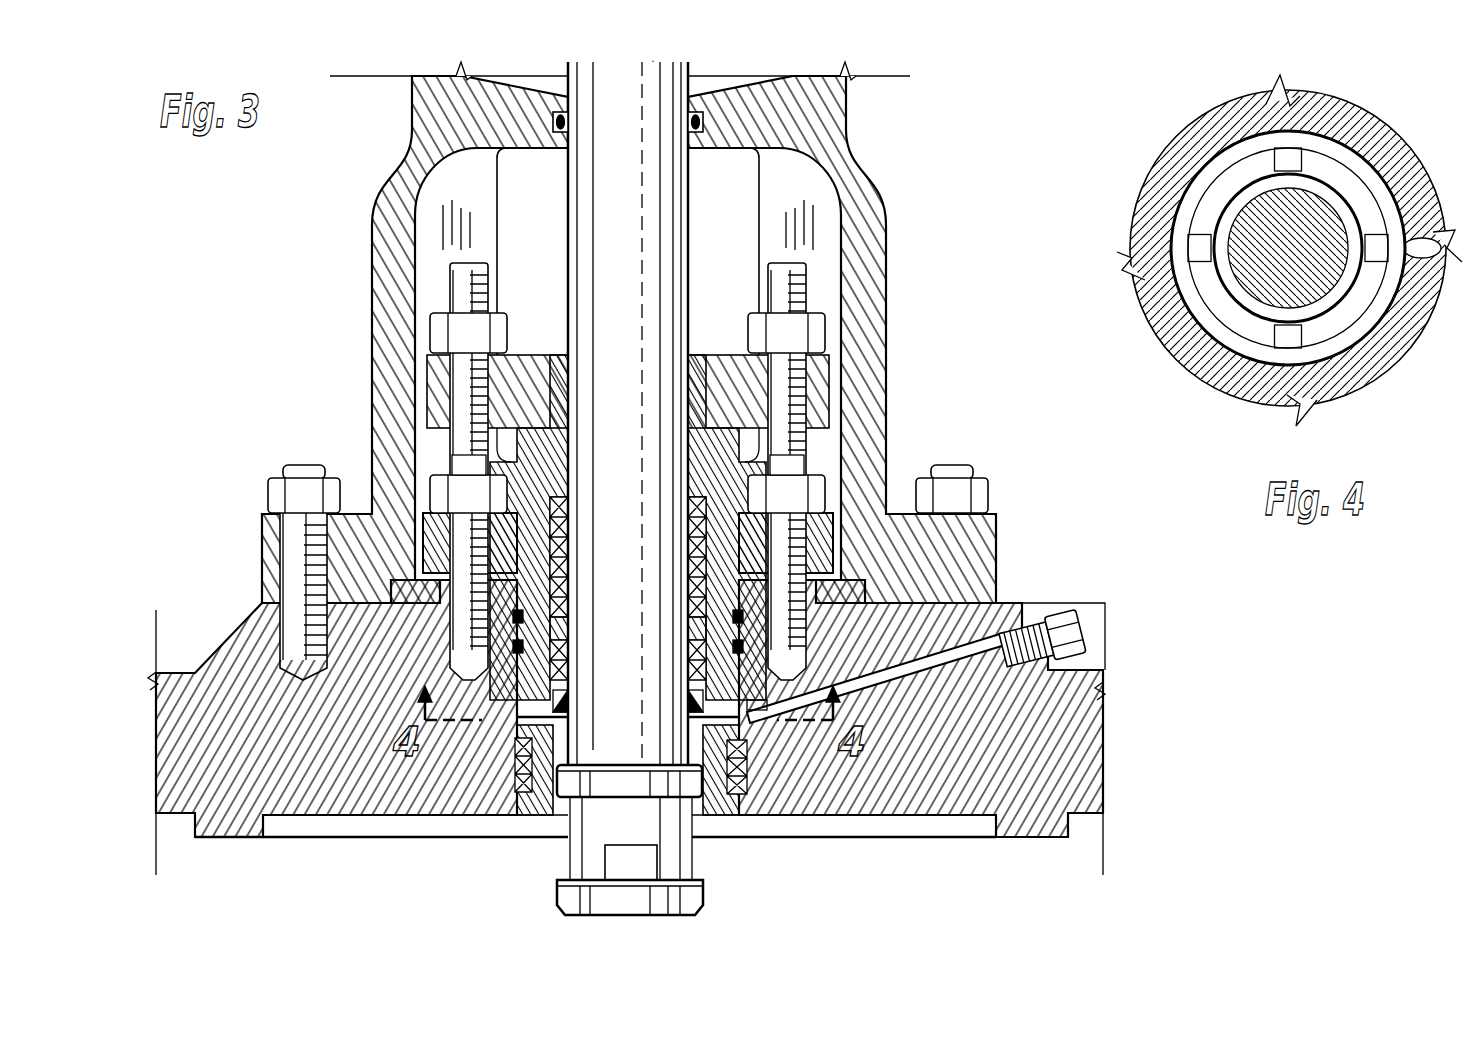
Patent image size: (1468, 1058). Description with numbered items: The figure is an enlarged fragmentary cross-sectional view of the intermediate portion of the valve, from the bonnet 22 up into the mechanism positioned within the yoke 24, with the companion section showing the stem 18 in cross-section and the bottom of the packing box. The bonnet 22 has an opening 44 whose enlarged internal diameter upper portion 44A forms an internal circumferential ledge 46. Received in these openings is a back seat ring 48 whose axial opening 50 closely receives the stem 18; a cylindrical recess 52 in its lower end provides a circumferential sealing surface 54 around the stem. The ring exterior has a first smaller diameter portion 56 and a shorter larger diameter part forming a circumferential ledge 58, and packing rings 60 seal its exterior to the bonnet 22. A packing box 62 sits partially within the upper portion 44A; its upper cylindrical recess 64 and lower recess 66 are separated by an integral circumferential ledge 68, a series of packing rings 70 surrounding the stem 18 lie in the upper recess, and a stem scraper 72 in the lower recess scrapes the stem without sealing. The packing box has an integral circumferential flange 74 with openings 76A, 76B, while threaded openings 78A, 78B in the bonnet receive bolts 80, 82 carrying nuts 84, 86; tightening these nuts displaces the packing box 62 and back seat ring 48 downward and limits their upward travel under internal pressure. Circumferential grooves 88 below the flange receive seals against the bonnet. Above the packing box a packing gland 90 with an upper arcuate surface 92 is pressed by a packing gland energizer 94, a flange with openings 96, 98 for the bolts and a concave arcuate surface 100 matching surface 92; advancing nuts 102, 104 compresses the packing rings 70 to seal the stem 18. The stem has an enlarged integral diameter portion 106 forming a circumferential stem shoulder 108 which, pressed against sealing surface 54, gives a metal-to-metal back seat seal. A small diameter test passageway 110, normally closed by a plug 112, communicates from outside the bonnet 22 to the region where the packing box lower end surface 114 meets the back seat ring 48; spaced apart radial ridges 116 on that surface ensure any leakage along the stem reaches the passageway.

In FIG. 3, the stem 18 is at (655, 283).
In FIG. 4, the stem 18 is at (1283, 285).
In FIG. 3, the bonnet 22 is at (250, 665).
In FIG. 4, the bonnet 22 is at (1192, 145).
In FIG. 3, the yoke 24 is at (858, 190).
In FIG. 3, the opening 44 is at (548, 817).
In FIG. 3, the enlarged internal diameter upper portion 44A is at (515, 748).
In FIG. 3, the internal circumferential ledge 46 is at (512, 777).
In FIG. 3, the back seat ring 48 is at (747, 740).
In FIG. 3, the axial opening 50 is at (577, 787).
In FIG. 3, the cylindrical recess 52 is at (697, 815).
In FIG. 3, the circumferential sealing surface 54 is at (680, 757).
In FIG. 3, the first smaller diameter portion 56 is at (743, 763).
In FIG. 3, the circumferential ledge 58 is at (355, 815).
In FIG. 3, the packing rings 60 is at (508, 758).
In FIG. 3, the packing box 62 is at (725, 533).
In FIG. 3, the upper cylindrical recess 64 is at (688, 523).
In FIG. 3, the lower recess 66 is at (683, 693).
In FIG. 3, the integral circumferential ledge 68 is at (572, 687).
In FIG. 3, the packing rings 70 is at (565, 570).
In FIG. 3, the stem scraper 72 is at (558, 710).
In FIG. 3, the integral circumferential flange 74 is at (920, 500).
In FIG. 3, the opening 76A is at (410, 585).
In FIG. 3, the opening 76B is at (862, 577).
In FIG. 3, the threaded opening 78A is at (455, 627).
In FIG. 3, the threaded opening 78B is at (808, 643).
In FIG. 3, the bolt 80 is at (455, 540).
In FIG. 3, the bolt 82 is at (808, 537).
In FIG. 3, the nut 84 is at (440, 485).
In FIG. 3, the nut 86 is at (790, 553).
In FIG. 3, the circumferential grooves 88 is at (518, 698).
In FIG. 3, the packing gland 90 is at (485, 430).
In FIG. 3, the upper arcuate surface 92 is at (562, 420).
In FIG. 3, the packing gland energizer 94 is at (727, 377).
In FIG. 3, the opening 96 is at (460, 383).
In FIG. 3, the opening 98 is at (805, 365).
In FIG. 3, the concave arcuate surface 100 is at (556, 422).
In FIG. 3, the nut 102 is at (440, 330).
In FIG. 3, the nut 104 is at (810, 330).
In FIG. 3, the enlarged integral diameter portion 106 is at (566, 830).
In FIG. 3, the circumferential stem shoulder 108 is at (607, 767).
In FIG. 3, the test passageway 110 is at (955, 655).
In FIG. 4, the test passageway 110 is at (1413, 258).
In FIG. 3, the plug 112 is at (1068, 605).
In FIG. 3, the lower end surface 114 is at (747, 723).
In FIG. 4, the lower end surface 114 is at (1357, 308).
In FIG. 3, the radial ridges 116 is at (722, 723).
In FIG. 4, the radial ridges 116 is at (1202, 250).